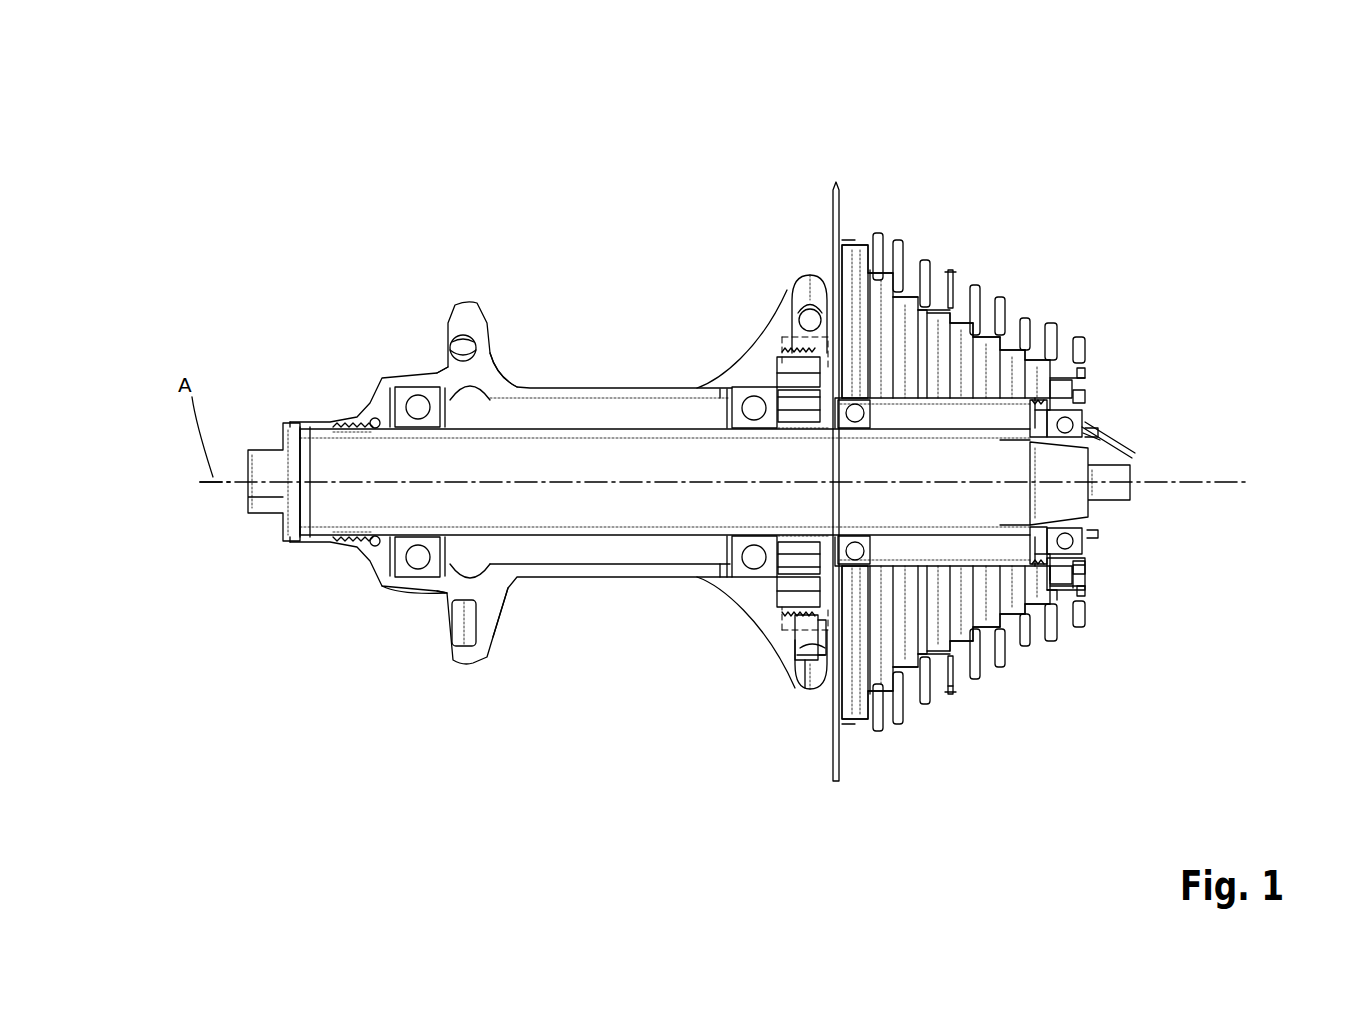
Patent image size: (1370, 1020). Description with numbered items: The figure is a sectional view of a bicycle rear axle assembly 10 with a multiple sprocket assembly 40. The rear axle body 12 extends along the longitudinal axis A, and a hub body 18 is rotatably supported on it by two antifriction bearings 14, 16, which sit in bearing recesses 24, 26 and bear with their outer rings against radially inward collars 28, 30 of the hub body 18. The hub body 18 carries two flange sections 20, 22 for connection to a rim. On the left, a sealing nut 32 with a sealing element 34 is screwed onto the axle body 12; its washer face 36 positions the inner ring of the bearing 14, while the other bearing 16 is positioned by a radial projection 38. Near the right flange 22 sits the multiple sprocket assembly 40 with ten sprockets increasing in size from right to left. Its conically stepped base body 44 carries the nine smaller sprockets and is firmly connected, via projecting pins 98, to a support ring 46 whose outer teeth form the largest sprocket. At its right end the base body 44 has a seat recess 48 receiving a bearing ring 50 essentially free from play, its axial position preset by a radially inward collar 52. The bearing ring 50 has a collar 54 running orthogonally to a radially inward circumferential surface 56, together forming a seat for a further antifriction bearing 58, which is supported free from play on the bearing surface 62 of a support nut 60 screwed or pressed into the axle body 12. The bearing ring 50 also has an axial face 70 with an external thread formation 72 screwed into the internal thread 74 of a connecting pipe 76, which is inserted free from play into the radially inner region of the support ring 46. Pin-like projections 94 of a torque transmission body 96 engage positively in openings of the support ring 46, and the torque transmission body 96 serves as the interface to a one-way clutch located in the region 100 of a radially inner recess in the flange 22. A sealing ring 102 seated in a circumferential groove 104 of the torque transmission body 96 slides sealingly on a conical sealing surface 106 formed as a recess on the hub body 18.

The rear axle assembly 10 is at (588, 235).
The rear axle body 12 is at (547, 537).
The antifriction bearing 14 is at (405, 577).
The antifriction bearing 16 is at (755, 578).
The hub body 18 is at (560, 388).
The flange section 20 is at (468, 300).
The flange section 22 is at (812, 277).
The bearing recess 24 is at (416, 393).
The bearing recess 26 is at (752, 384).
The collar 28 is at (445, 577).
The collar 30 is at (722, 392).
The sealing nut 32 is at (268, 457).
The sealing element 34 is at (375, 418).
The washer face 36 is at (377, 546).
The radial projection 38 is at (813, 543).
The multiple sprocket assembly 40 is at (993, 714).
The base body 44 is at (1010, 632).
The support ring 46 is at (828, 350).
The seat recess 48 is at (1087, 375).
The bearing ring 50 is at (1085, 386).
The collar 52 is at (1085, 378).
The collar 54 is at (1083, 558).
The circumferential surface 56 is at (1083, 432).
The antifriction bearing 58 is at (1093, 533).
The support nut 60 is at (1115, 502).
The bearing surface 62 is at (1090, 528).
The axial face 70 is at (1080, 572).
The external thread formation 72 is at (1053, 567).
The internal thread 74 is at (1105, 447).
The connecting pipe 76 is at (927, 640).
The pin-like projections 94 is at (850, 727).
The torque transmission body 96 is at (832, 640).
The projecting pins 98 is at (858, 727).
The region 100 is at (792, 372).
The sealing ring 102 is at (820, 208).
The circumferential groove 104 is at (767, 600).
The sealing surface 106 is at (798, 688).